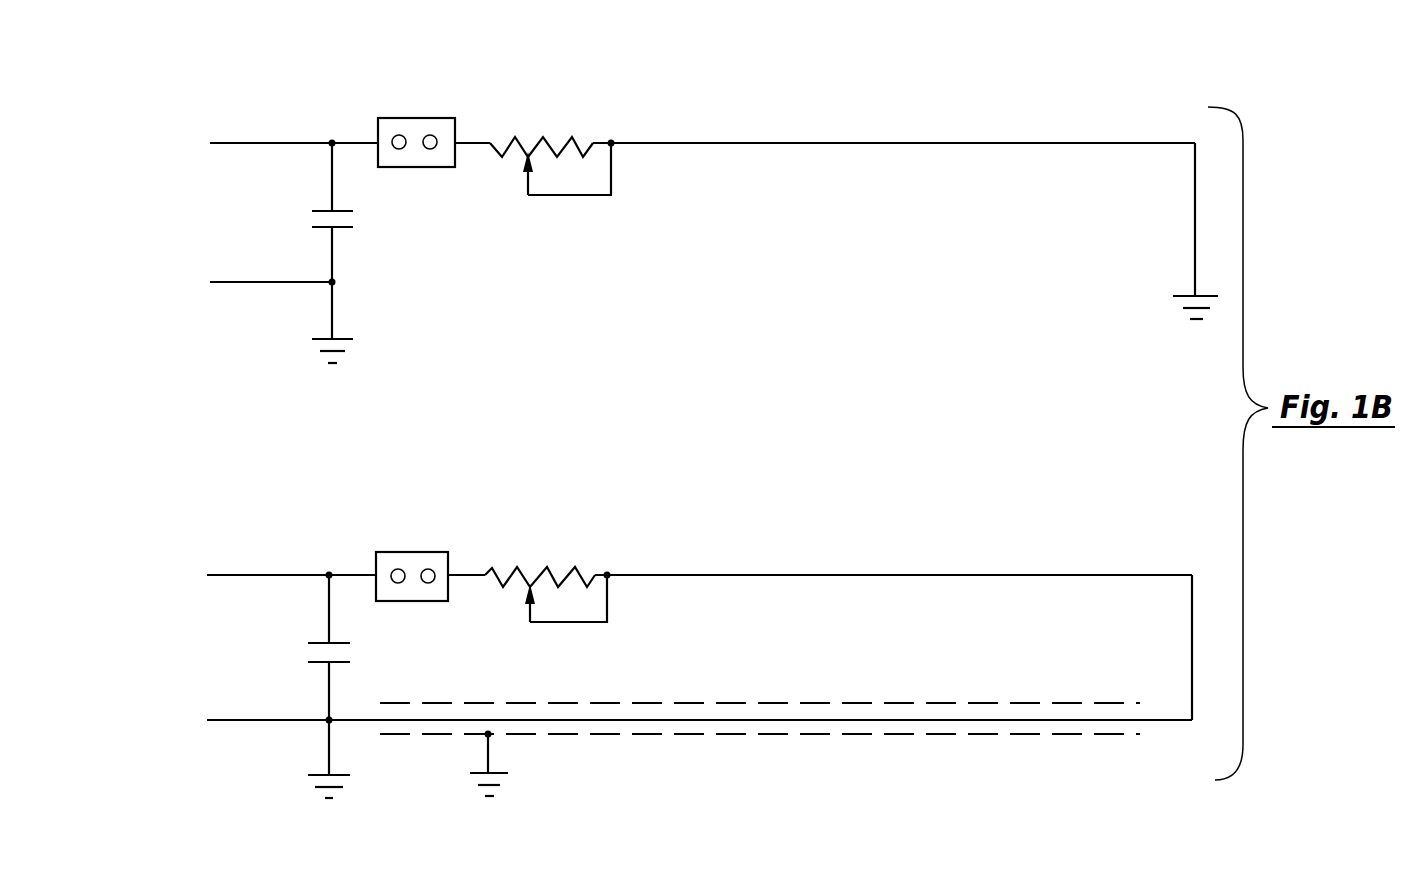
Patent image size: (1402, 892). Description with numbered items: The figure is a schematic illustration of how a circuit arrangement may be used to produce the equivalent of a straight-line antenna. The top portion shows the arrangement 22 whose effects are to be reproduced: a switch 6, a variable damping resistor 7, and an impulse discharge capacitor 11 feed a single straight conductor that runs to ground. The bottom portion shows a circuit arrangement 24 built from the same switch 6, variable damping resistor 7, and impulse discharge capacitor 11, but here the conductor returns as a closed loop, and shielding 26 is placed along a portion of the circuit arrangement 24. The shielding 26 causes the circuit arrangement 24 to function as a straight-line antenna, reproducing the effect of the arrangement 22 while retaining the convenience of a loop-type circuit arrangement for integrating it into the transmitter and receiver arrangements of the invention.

The switch 6 is at (418, 118).
The variable damping resistor 7 is at (545, 137).
The impulse discharge capacitor 11 is at (343, 227).
The arrangement 22 is at (1065, 117).
The circuit arrangement 24 is at (1043, 545).
The shielding 26 is at (1003, 737).